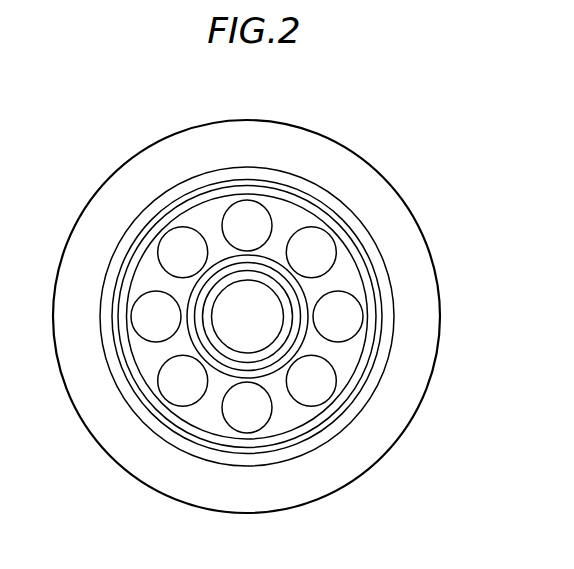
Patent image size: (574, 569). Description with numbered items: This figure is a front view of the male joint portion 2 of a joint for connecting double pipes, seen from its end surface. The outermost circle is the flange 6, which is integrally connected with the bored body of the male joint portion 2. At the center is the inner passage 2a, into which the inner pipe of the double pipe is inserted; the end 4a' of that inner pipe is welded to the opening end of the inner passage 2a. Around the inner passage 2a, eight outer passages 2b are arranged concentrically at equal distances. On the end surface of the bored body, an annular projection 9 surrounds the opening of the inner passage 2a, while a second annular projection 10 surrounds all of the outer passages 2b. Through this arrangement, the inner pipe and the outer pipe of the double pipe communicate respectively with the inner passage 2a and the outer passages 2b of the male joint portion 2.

The male joint portion 2 is at (155, 140).
The inner passage 2a is at (242, 302).
The outer passages 2b is at (317, 383).
The end of the inner pipe 4a' is at (341, 304).
The flange 6 is at (258, 135).
The annular projection 9 is at (222, 372).
The annular projection 10 is at (295, 437).